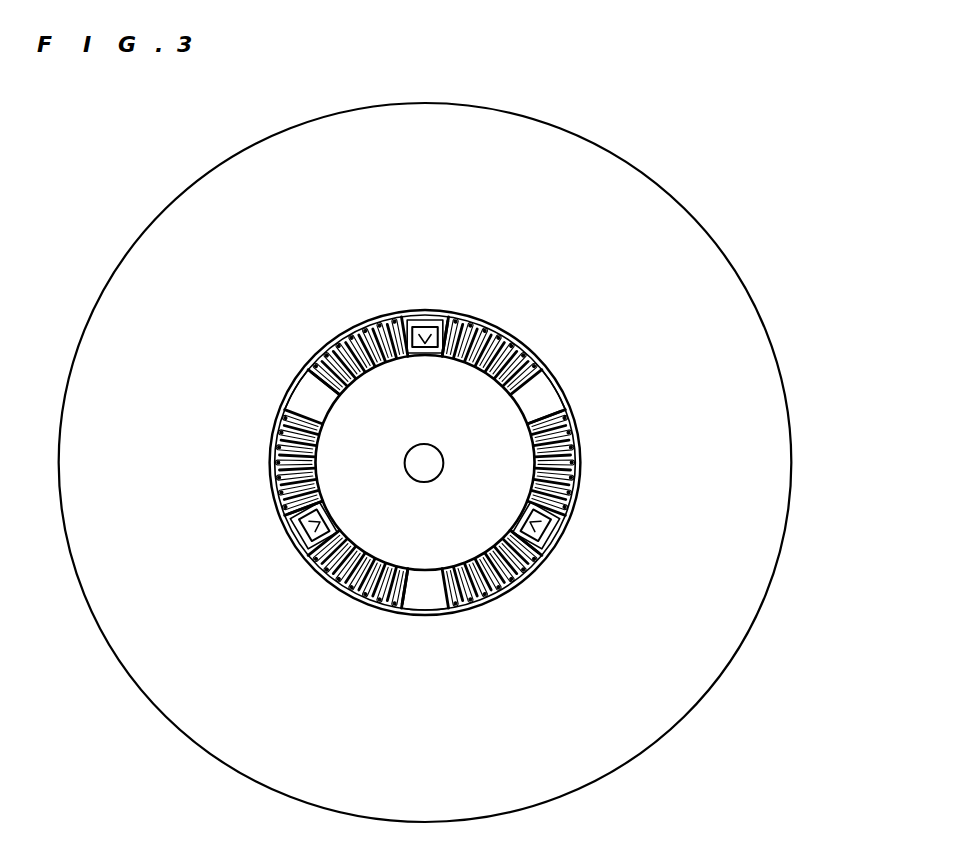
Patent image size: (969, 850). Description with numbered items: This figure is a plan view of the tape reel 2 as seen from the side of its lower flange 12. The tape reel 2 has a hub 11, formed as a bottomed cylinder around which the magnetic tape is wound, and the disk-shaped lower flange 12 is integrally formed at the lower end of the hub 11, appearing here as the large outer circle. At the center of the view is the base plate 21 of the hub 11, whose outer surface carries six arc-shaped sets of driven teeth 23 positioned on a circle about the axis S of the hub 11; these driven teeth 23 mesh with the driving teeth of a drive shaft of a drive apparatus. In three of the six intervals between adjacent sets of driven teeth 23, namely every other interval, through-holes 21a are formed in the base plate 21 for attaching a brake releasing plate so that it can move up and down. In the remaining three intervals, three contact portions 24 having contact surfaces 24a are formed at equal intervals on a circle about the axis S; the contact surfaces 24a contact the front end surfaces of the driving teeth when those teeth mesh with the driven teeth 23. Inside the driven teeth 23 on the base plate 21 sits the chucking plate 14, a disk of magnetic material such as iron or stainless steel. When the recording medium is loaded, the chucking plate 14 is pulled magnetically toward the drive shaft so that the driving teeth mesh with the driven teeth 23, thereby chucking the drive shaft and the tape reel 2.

The tape reel 2 is at (181, 128).
The hub 11 is at (578, 405).
The lower flange 12 is at (672, 192).
The chucking plate 14 is at (423, 371).
The base plate 21 is at (346, 404).
The through-hole 21a is at (433, 326).
The driven teeth 23 is at (345, 333).
The contact portion 24 is at (566, 388).
The contact surface 24a is at (530, 403).
The axis S is at (424, 463).